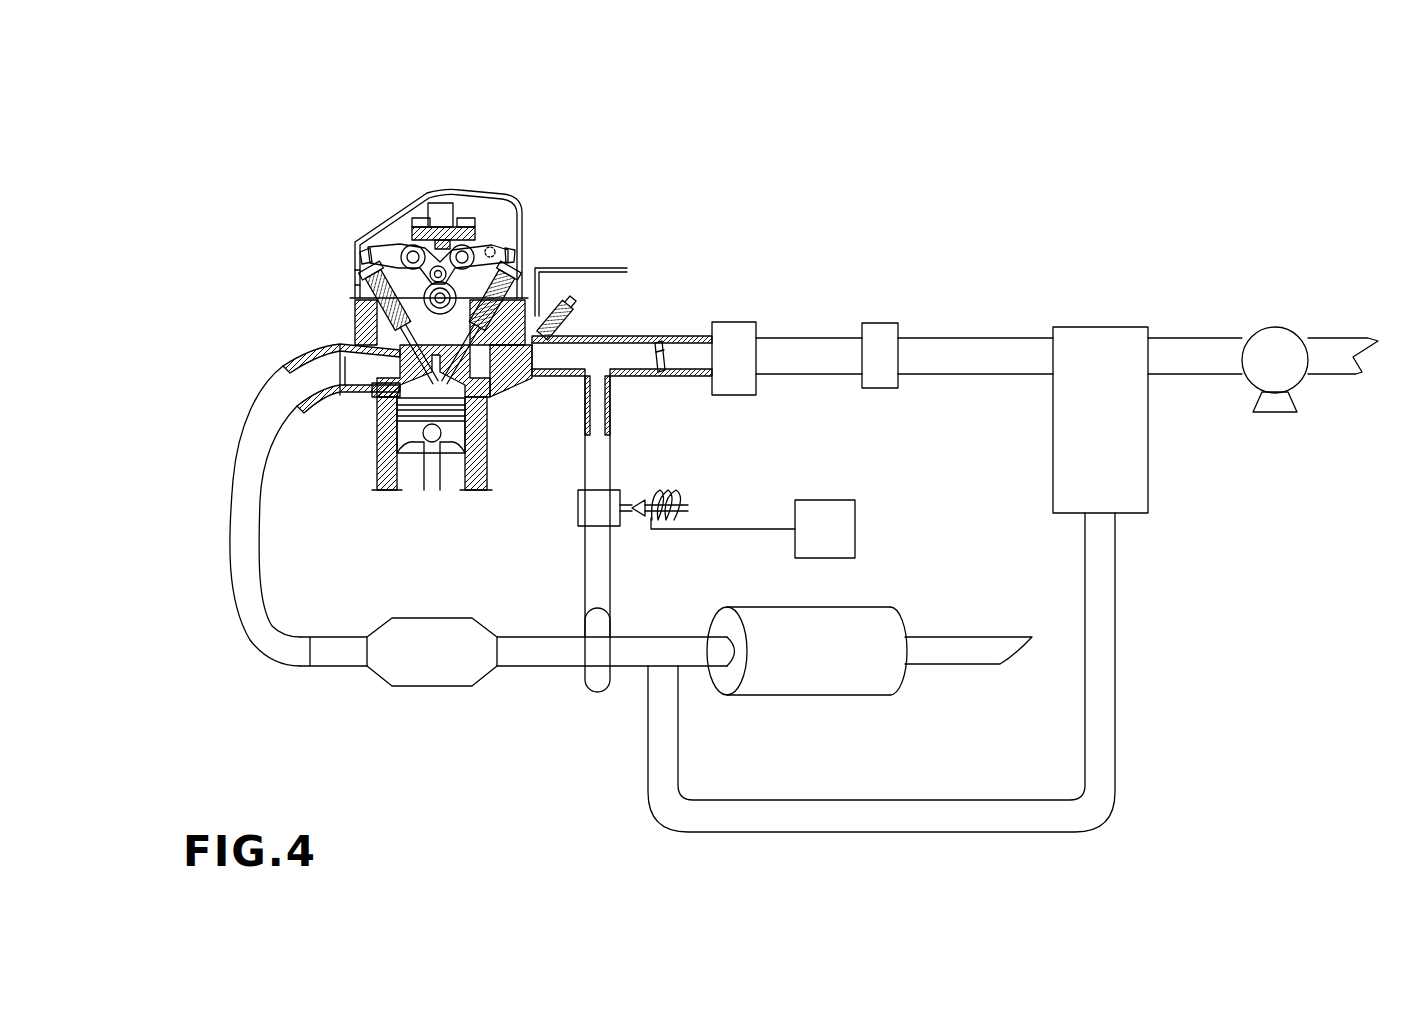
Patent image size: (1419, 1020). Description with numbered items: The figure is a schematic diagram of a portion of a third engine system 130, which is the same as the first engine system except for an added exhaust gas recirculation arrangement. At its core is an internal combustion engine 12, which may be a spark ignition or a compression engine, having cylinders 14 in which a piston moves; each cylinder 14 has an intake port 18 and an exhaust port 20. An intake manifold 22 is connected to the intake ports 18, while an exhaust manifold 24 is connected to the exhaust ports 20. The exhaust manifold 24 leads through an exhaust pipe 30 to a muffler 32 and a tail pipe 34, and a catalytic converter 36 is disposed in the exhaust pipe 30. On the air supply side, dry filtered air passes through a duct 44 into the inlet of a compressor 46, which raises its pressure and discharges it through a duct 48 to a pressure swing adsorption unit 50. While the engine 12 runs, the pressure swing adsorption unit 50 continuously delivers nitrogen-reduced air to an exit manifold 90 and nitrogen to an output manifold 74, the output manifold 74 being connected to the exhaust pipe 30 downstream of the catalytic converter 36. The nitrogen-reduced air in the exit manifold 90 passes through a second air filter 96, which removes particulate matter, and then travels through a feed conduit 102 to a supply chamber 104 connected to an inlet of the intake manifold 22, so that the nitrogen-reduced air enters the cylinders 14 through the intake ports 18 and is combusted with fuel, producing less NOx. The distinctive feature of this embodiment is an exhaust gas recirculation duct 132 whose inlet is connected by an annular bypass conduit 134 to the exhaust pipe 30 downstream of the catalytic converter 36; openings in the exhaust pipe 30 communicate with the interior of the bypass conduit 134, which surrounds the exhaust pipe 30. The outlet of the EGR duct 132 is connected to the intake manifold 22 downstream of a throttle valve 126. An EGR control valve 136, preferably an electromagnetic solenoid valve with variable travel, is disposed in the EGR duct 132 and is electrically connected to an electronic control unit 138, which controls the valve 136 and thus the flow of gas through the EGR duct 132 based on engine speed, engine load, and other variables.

The internal combustion engine 12 is at (381, 192).
The cylinders 14 is at (410, 467).
The intake port 18 is at (510, 355).
The exhaust port 20 is at (353, 362).
The intake manifold 22 is at (600, 337).
The exhaust manifold 24 is at (248, 477).
The exhaust pipe 30 is at (535, 658).
The muffler 32 is at (788, 676).
The tail pipe 34 is at (960, 642).
The catalytic converter 36 is at (437, 665).
The duct 44 is at (1330, 347).
The compressor 46 is at (1268, 342).
The duct 48 is at (1182, 345).
The pressure swing adsorption unit 50 is at (1085, 337).
The output manifold 74 is at (1115, 632).
The exit manifold 90 is at (983, 345).
The second air filter 96 is at (878, 345).
The feed conduit 102 is at (815, 347).
The supply chamber 104 is at (735, 333).
The throttle valve 126 is at (661, 357).
The third engine system 130 is at (908, 228).
The exhaust gas recirculation duct 132 is at (600, 470).
The annular bypass conduit 134 is at (593, 650).
The EGR control valve 136 is at (590, 508).
The electronic control unit 138 is at (828, 500).